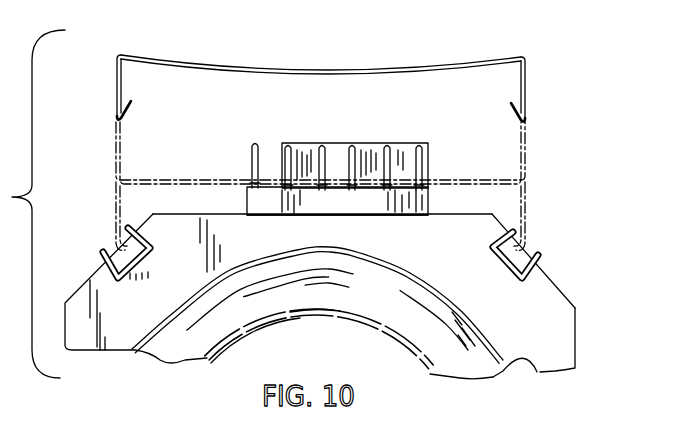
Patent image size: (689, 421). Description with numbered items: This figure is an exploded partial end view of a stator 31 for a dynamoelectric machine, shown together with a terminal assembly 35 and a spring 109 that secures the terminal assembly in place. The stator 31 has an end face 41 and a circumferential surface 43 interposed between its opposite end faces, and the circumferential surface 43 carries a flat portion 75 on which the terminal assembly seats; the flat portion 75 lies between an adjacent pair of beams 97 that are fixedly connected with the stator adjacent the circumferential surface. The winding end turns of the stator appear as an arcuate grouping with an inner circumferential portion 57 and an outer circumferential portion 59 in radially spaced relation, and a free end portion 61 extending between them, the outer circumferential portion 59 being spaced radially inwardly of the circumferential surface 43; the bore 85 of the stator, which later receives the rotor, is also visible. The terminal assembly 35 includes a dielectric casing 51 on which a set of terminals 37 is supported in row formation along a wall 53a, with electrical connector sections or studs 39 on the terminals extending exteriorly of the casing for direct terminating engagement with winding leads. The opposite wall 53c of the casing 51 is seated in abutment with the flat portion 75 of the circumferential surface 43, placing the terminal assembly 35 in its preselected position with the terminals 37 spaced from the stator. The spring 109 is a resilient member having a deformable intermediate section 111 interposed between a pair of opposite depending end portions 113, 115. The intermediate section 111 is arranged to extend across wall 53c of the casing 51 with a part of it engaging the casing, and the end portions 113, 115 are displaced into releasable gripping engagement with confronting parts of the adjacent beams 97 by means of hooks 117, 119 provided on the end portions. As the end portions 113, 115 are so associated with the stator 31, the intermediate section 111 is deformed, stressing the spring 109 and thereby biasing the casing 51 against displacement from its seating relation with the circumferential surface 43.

The stator 31 is at (347, 310).
The terminal assembly 35 is at (359, 164).
The terminals 37 is at (348, 143).
The electrical connector section 39 is at (321, 190).
The end face 41 is at (570, 350).
The circumferential surface 43 is at (561, 280).
The casing 51 is at (247, 201).
The wall 53a is at (273, 179).
The wall 53c is at (302, 218).
The inner circumferential portion 57 is at (319, 339).
The outer circumferential portion 59 is at (538, 373).
The free end portion 61 is at (457, 357).
The flat portion 75 is at (459, 215).
The bore 85 is at (332, 321).
The beams 97 is at (138, 264).
The spring 109 is at (321, 69).
The intermediate section 111 is at (217, 62).
The end portion 113 is at (117, 84).
The end portion 115 is at (527, 80).
The hook 117 is at (130, 106).
The hook 119 is at (511, 116).